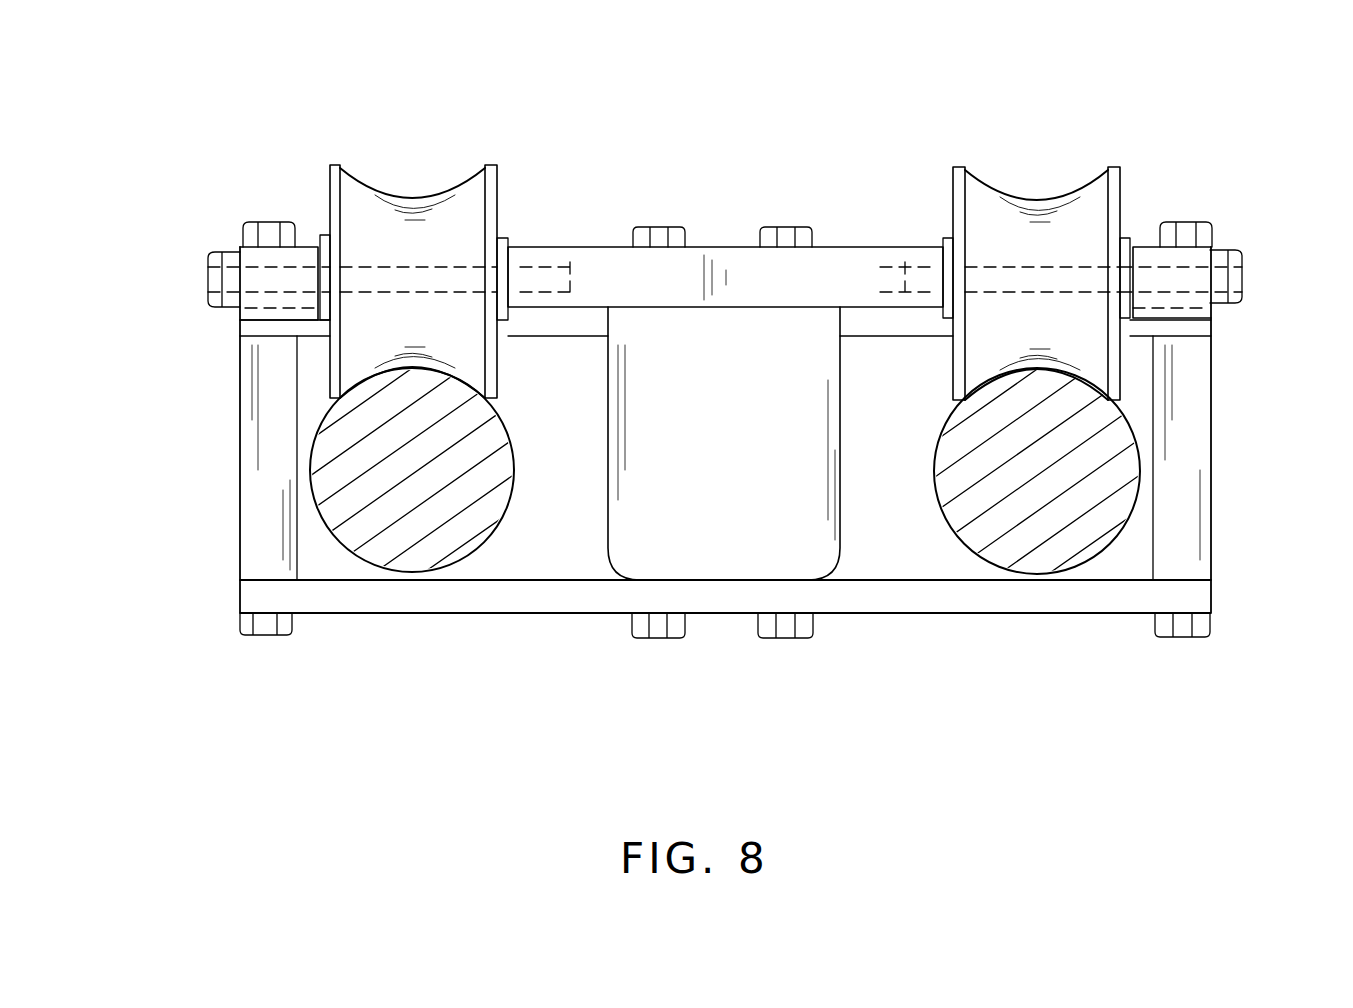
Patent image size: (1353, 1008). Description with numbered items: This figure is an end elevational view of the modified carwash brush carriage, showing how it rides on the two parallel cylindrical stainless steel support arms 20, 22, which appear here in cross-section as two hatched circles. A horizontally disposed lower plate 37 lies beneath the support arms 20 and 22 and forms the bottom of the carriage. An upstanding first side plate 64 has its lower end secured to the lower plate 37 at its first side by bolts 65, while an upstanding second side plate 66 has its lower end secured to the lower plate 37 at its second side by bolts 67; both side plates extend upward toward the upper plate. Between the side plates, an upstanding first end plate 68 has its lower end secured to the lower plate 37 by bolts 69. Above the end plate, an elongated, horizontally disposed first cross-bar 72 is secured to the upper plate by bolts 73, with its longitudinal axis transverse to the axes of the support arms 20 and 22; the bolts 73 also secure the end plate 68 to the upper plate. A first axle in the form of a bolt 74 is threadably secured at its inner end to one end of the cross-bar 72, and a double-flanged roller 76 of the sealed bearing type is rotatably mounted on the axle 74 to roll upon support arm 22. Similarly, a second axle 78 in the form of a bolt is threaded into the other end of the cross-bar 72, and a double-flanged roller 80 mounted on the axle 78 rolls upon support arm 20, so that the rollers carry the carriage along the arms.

The support arm 20 is at (1110, 447).
The support arm 22 is at (355, 490).
The lower plate 37 is at (462, 624).
The first side plate 64 is at (215, 420).
The bolts 65 is at (265, 627).
The second side plate 66 is at (1210, 525).
The bolts 67 is at (1202, 628).
The first end plate 68 is at (658, 534).
The bolts 69 is at (760, 635).
The first cross-bar 72 is at (846, 265).
The bolts 73 is at (783, 225).
The first axle 74 is at (227, 285).
The double-flanged roller 76 is at (478, 200).
The second axle 78 is at (1227, 282).
The double-flanged roller 80 is at (1097, 175).